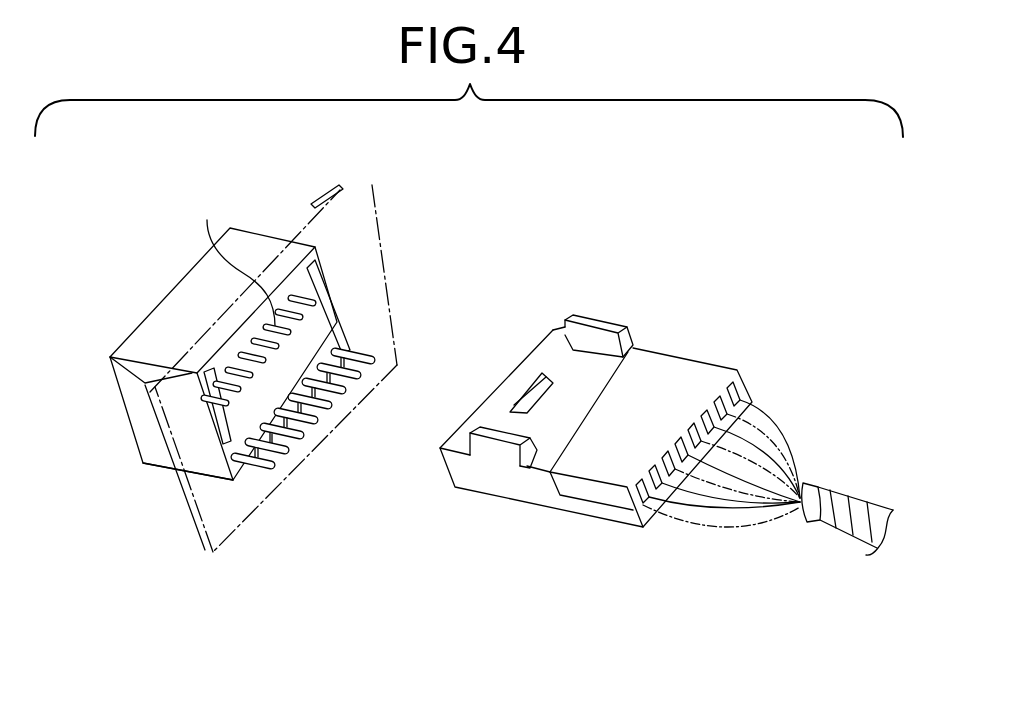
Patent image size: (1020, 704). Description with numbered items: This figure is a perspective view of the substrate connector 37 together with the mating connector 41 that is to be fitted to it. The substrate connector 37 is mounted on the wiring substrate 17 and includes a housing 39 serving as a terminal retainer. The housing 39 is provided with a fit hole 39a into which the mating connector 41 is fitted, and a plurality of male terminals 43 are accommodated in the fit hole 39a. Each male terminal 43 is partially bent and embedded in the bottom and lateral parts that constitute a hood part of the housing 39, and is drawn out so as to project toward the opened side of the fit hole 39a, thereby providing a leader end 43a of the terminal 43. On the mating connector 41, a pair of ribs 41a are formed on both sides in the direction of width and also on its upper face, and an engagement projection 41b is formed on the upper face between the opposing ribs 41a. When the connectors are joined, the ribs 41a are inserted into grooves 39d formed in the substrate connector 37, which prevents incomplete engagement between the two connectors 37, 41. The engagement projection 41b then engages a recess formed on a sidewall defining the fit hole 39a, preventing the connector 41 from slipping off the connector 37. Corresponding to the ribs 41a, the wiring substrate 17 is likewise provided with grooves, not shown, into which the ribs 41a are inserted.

The wiring substrate 17 is at (380, 172).
The substrate connector 37 is at (167, 281).
The housing 39 is at (148, 314).
The fit hole 39a is at (210, 442).
The grooves 39d is at (322, 256).
The mating connector 41 is at (700, 348).
The ribs 41a is at (610, 318).
The engagement projection 41b is at (542, 378).
The male terminals 43 is at (268, 333).
The leader end 43a is at (317, 415).